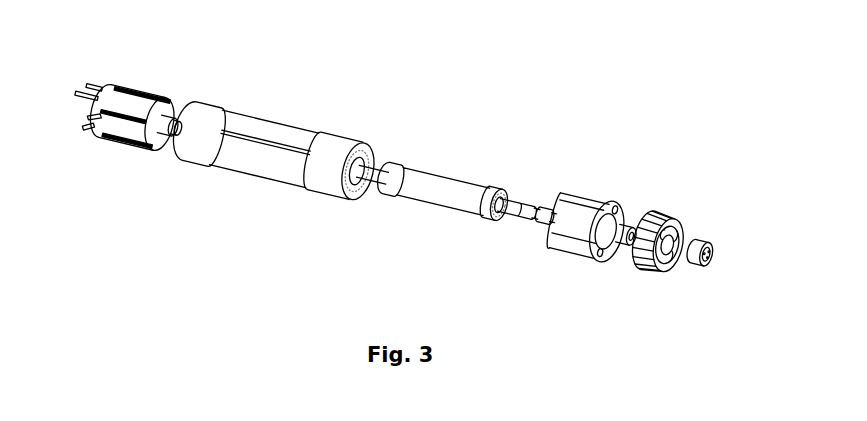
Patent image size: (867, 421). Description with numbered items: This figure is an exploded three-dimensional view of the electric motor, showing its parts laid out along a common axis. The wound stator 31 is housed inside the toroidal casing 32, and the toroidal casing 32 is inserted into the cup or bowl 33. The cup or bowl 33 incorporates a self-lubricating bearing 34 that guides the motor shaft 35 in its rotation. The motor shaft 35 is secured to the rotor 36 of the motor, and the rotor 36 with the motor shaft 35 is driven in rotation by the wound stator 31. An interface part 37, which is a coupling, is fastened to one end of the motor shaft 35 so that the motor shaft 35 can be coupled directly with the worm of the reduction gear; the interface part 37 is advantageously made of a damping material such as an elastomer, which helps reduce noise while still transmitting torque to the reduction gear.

The wound stator 31 is at (242, 163).
The toroidal casing 32 is at (592, 245).
The cup or bowl 33 is at (658, 221).
The self-lubricating bearing 34 is at (626, 220).
The motor shaft 35 is at (515, 207).
The rotor 36 is at (412, 180).
The interface part 37 is at (697, 262).